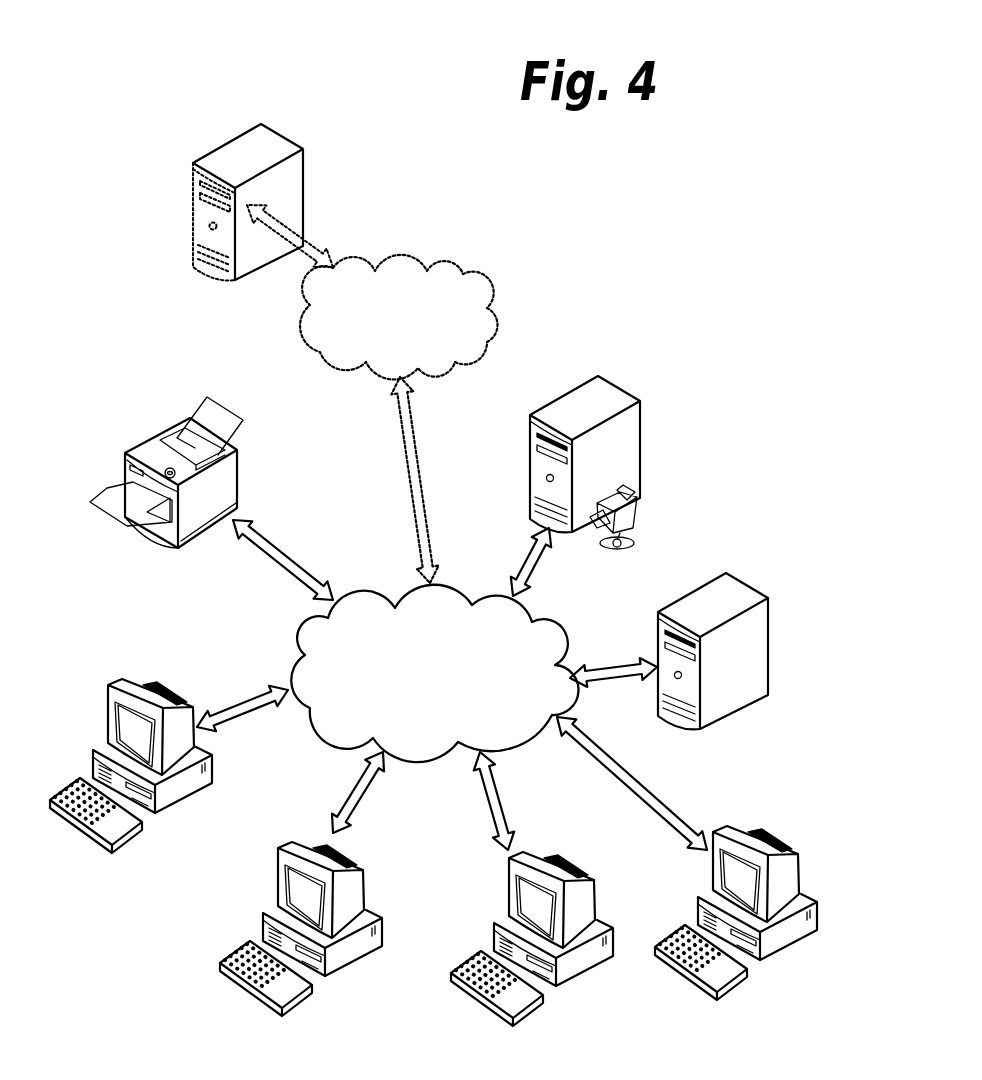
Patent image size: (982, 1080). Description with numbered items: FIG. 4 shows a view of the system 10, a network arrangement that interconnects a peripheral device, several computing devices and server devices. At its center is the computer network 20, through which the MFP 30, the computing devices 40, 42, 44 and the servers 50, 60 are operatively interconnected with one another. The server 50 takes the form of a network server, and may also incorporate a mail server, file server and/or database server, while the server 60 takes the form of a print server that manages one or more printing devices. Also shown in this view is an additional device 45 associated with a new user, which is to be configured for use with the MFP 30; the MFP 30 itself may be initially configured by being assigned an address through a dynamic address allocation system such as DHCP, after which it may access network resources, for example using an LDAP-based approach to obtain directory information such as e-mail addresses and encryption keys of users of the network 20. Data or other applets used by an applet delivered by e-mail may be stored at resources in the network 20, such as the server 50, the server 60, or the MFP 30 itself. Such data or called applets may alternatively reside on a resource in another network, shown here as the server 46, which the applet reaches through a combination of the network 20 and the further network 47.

The system 10 is at (670, 318).
The computer network 20 is at (487, 722).
The MFP 30 is at (239, 478).
The computing device 40 is at (108, 725).
The computing device 42 is at (265, 915).
The computing device 44 is at (538, 1018).
The additional device 45 is at (797, 938).
The server 46 is at (193, 182).
The network 47 is at (464, 272).
The server 50 is at (742, 585).
The server 60 is at (625, 390).